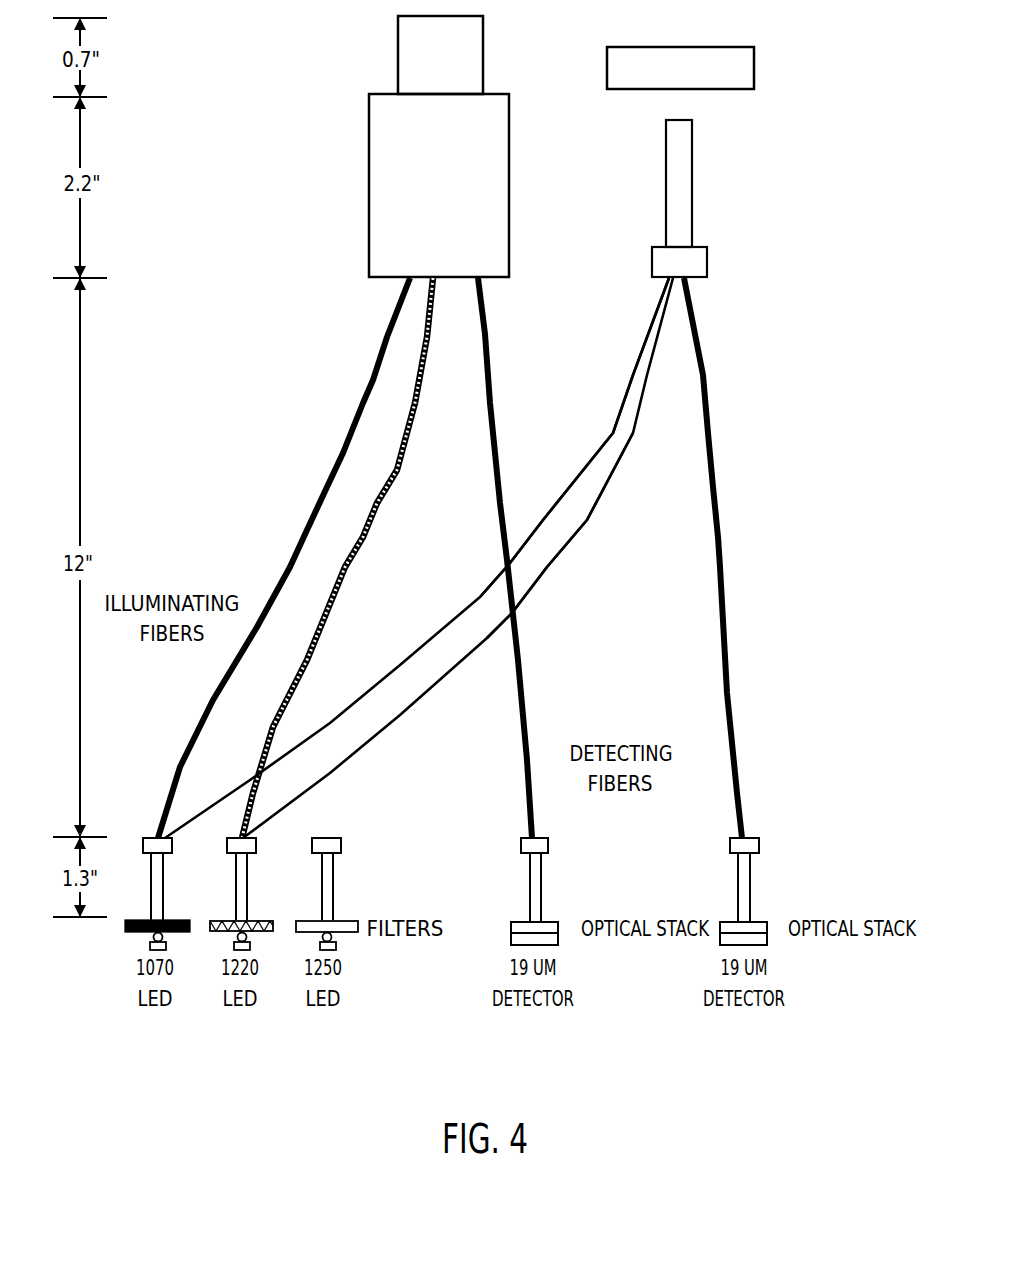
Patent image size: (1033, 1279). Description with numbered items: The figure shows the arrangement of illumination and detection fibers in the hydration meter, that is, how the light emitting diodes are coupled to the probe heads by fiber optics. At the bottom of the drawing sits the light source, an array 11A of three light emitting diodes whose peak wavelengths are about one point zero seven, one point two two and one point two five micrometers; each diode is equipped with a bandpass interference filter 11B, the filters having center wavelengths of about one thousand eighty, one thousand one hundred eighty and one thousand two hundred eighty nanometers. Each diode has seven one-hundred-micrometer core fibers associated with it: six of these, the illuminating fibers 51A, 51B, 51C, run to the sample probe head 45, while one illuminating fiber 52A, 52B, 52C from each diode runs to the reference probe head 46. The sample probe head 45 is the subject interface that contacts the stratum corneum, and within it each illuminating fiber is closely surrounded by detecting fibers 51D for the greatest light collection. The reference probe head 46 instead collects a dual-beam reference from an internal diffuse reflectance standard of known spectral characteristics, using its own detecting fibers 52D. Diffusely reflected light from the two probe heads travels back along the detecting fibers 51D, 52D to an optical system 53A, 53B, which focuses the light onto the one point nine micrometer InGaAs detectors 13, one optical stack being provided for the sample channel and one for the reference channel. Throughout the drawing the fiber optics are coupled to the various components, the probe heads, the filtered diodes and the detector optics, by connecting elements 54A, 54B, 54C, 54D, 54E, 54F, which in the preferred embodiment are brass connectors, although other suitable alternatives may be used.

The sample probe head 45 is at (369, 185).
The reference probe head 46 is at (755, 63).
The illuminating fiber 51A is at (385, 355).
The illuminating fiber 51B is at (405, 417).
The illuminating fiber 51C is at (432, 479).
The detecting fibers 51D is at (500, 543).
The illuminating fiber 52A is at (633, 375).
The illuminating fiber 52B is at (633, 433).
The illuminating fiber 52C is at (658, 487).
The detecting fibers 52D is at (720, 537).
The connecting element 54A is at (708, 262).
The connecting element 54B is at (759, 843).
The connecting element 54C is at (548, 843).
The connecting element 54D is at (341, 843).
The connecting element 54E is at (256, 843).
The connecting element 54F is at (172, 843).
The optical system 53A is at (553, 920).
The optical system 53B is at (762, 920).
The InGaAs detector 13 is at (558, 938).
The array of light emitting diodes 11A is at (134, 972).
The bandpass interference filter 11B is at (361, 946).